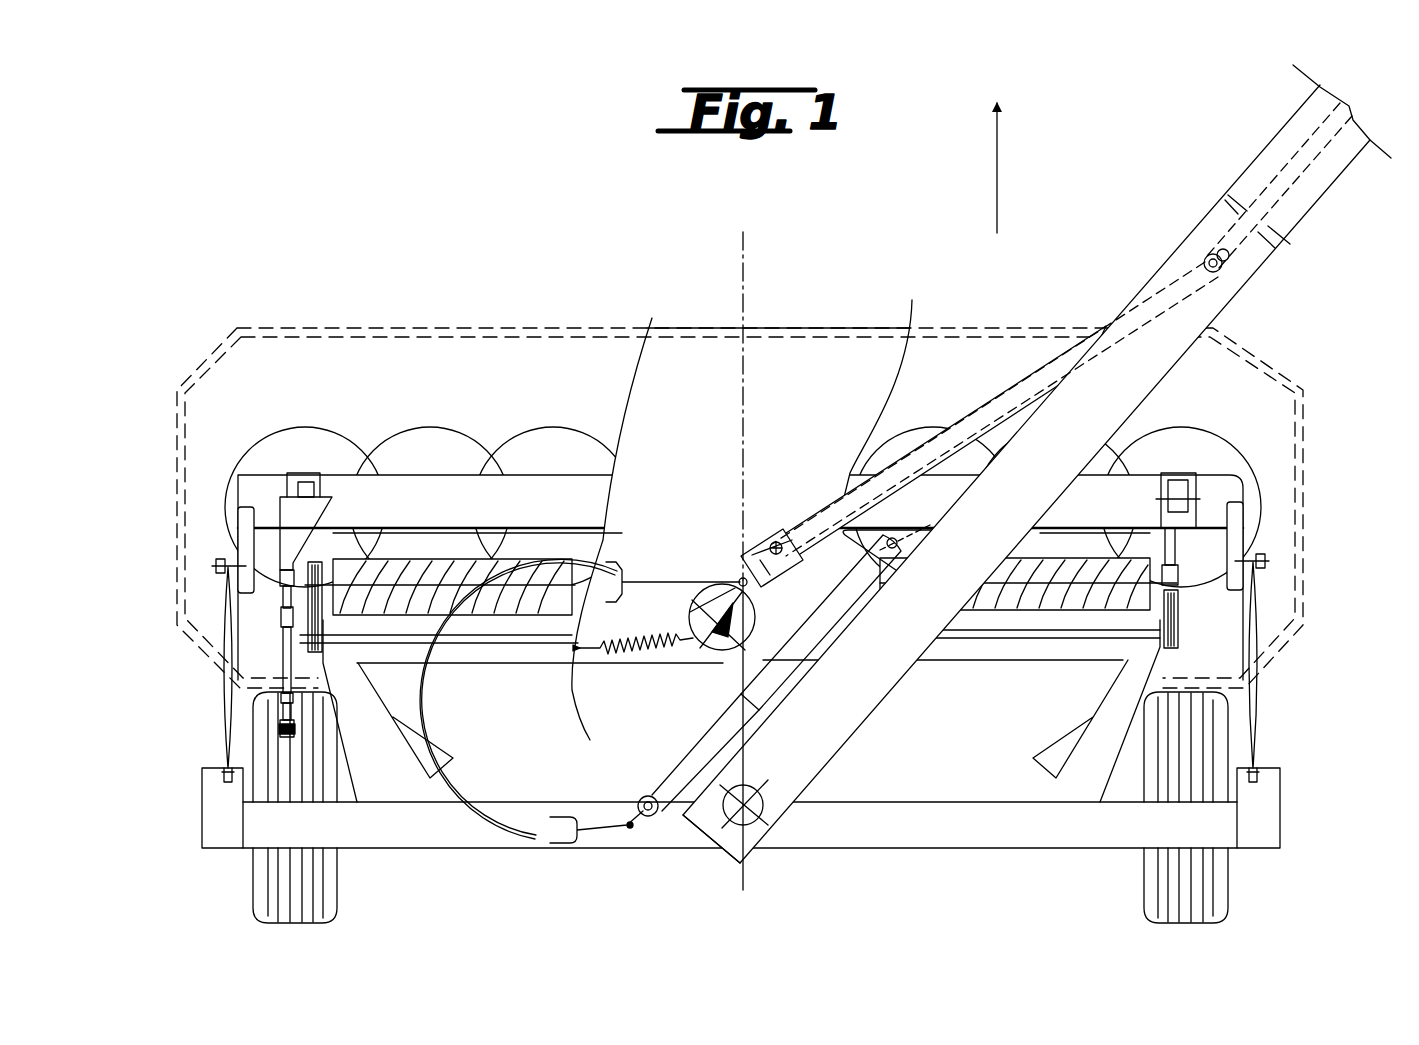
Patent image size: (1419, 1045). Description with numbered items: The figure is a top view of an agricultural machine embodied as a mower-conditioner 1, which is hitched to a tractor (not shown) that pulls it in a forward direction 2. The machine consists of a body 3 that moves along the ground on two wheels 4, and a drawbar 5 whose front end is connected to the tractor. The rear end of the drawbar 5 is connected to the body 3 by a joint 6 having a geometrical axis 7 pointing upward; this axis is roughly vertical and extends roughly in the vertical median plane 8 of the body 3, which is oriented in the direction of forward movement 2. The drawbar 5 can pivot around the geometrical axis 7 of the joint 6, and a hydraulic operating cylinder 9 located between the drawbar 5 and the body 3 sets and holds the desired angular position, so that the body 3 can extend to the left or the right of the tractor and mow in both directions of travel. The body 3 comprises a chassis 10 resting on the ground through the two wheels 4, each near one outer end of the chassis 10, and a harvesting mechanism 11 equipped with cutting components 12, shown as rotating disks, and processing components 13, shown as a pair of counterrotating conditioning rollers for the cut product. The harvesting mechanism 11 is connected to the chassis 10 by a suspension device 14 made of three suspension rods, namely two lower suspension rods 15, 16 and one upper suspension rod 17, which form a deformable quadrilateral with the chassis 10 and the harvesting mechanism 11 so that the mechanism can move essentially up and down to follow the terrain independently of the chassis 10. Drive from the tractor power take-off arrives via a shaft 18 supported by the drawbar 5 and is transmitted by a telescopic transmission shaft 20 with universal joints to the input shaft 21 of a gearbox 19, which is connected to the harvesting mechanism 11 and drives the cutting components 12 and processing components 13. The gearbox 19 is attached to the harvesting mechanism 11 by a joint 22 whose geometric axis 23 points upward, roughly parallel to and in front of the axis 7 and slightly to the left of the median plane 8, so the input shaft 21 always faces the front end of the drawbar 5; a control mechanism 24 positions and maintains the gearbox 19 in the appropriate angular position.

The mower-conditioner 1 is at (630, 272).
The forward direction 2 is at (997, 170).
The body 3 is at (787, 328).
The wheels 4 is at (335, 885).
The drawbar 5 is at (1165, 258).
The joint 6 is at (731, 824).
The geometrical axis 7 is at (762, 808).
The vertical median plane 8 is at (746, 260).
The hydraulic operating cylinder 9 is at (652, 791).
The chassis 10 is at (962, 845).
The harvesting mechanism 11 is at (397, 497).
The cutting components 12 is at (277, 440).
The processing components 13 is at (1010, 618).
The suspension device 14 is at (220, 701).
The lower suspension rod 15 is at (225, 735).
The lower suspension rod 16 is at (1255, 729).
The upper suspension rod 17 is at (283, 662).
The shaft 18 is at (1292, 183).
The gearbox 19 is at (720, 567).
The telescopic transmission shaft 20 is at (993, 407).
The input shaft 21 is at (760, 527).
The joint 22 is at (700, 642).
The geometric axis 23 is at (733, 640).
The control mechanism 24 is at (474, 826).